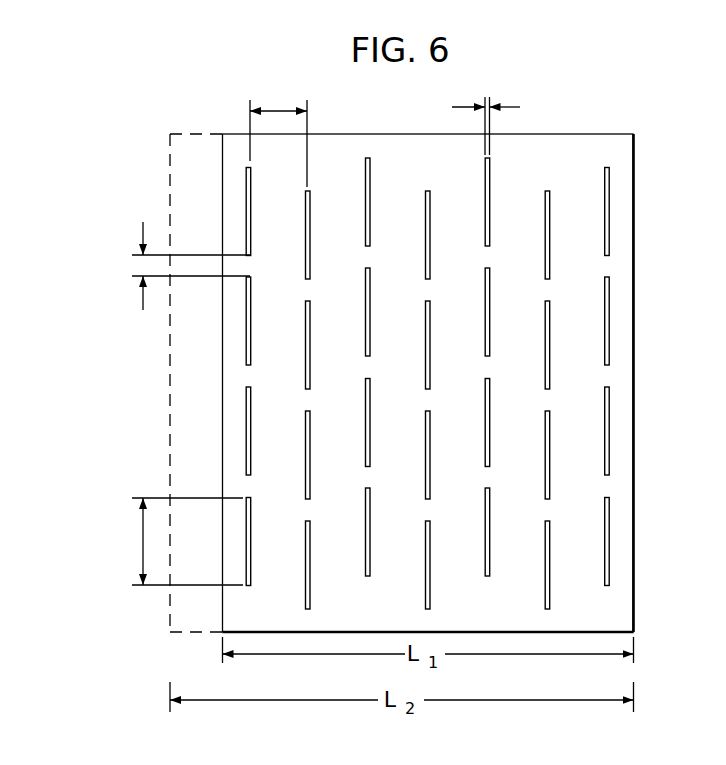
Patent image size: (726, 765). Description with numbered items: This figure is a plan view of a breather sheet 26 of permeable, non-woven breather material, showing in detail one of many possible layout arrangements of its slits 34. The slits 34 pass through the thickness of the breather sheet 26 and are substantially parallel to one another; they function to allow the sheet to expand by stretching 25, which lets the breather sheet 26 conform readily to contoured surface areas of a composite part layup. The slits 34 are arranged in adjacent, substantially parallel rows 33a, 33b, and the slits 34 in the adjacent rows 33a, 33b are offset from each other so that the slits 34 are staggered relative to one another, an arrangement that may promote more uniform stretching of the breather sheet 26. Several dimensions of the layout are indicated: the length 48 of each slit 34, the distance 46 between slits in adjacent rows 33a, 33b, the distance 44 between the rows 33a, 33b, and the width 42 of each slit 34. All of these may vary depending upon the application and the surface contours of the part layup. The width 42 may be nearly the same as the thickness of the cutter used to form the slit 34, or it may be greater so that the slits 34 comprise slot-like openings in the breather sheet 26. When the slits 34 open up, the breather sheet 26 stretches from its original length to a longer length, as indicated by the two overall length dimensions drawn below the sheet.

The stretching 25 is at (169, 375).
The breather sheet 26 is at (623, 152).
The row of slits 33a is at (300, 577).
The adjacent row of slits 33b is at (375, 557).
The slits 34 is at (608, 212).
The width of slit 42 is at (508, 107).
The distance between rows 44 is at (278, 111).
The distance between slits in adjacent rows 46 is at (143, 232).
The length of slit 48 is at (143, 540).